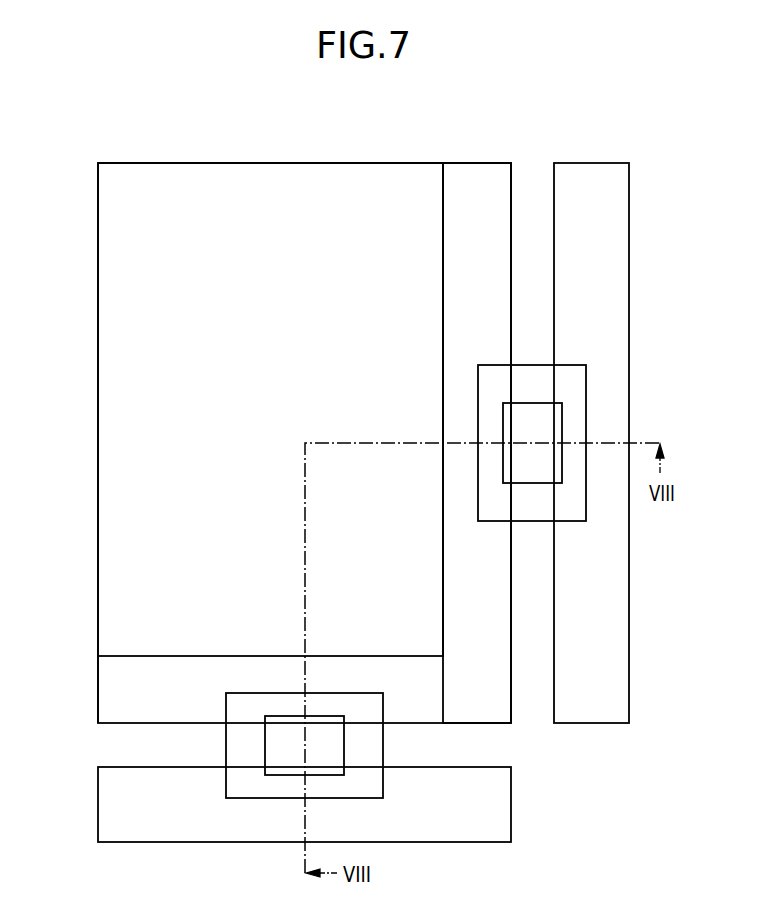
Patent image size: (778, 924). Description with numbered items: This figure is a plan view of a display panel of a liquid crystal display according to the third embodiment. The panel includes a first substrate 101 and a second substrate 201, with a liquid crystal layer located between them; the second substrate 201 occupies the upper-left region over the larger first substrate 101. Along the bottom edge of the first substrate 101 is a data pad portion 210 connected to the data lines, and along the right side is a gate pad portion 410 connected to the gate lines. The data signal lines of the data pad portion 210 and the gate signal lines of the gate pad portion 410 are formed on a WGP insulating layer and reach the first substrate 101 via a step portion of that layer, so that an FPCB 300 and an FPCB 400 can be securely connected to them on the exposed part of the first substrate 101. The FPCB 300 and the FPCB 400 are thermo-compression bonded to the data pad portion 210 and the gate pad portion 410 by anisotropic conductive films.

The first substrate 101 is at (125, 721).
The second substrate 201 is at (274, 172).
The data pad portion 210 is at (93, 658).
The FPCB 300 is at (373, 778).
The FPCB 400 is at (566, 513).
The gate pad portion 410 is at (510, 153).